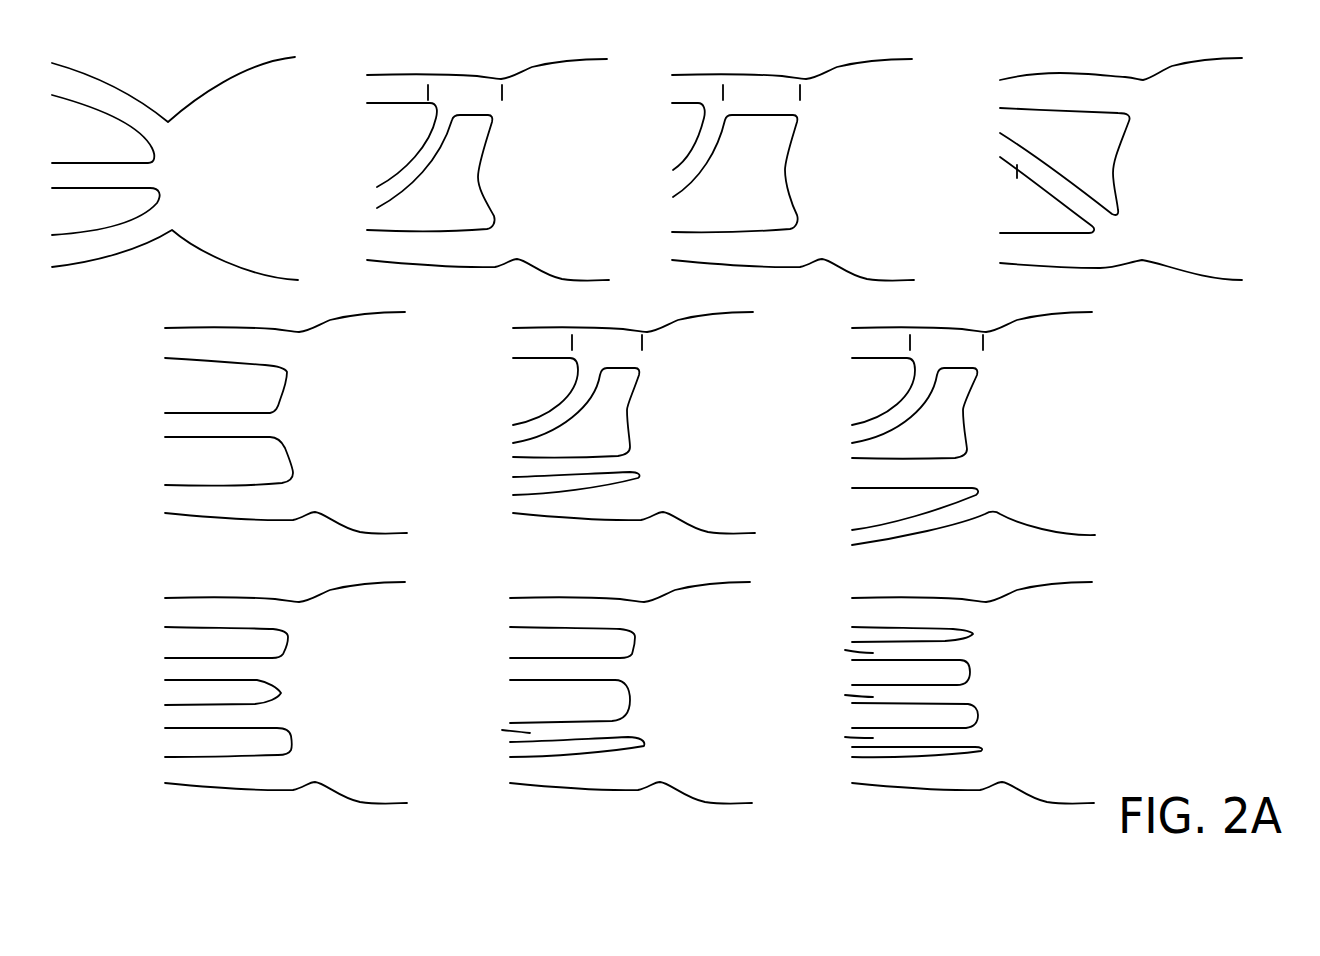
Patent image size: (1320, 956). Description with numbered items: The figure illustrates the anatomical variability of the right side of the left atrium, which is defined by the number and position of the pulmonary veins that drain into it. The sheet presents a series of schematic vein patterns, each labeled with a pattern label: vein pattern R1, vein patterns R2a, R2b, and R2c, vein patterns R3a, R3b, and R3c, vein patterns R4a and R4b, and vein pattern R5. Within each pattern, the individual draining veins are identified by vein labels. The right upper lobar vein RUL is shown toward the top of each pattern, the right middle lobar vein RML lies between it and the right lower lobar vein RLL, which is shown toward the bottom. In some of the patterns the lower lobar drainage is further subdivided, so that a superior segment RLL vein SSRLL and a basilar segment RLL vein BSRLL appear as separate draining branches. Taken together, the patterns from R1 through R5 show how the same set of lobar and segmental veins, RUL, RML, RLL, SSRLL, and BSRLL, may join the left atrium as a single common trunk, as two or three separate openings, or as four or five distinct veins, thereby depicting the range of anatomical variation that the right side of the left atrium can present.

The vein pattern R1 is at (175, 168).
The vein pattern R2a is at (488, 170).
The vein pattern R2b is at (793, 170).
The vein pattern R2c is at (1121, 169).
The vein pattern R3a is at (286, 423).
The vein pattern R3b is at (599, 423).
The vein pattern R3c is at (973, 428).
The vein pattern R4a is at (286, 693).
The vein pattern R4b is at (597, 693).
The vein pattern R5 is at (941, 693).
The right upper lobar vein RUL is at (173, 110).
The right middle lobar vein RML is at (106, 200).
The right lower lobar vein RLL is at (175, 255).
The superior segment RLL vein SSRLL is at (530, 468).
The basilar segment RLL vein BSRLL is at (973, 520).